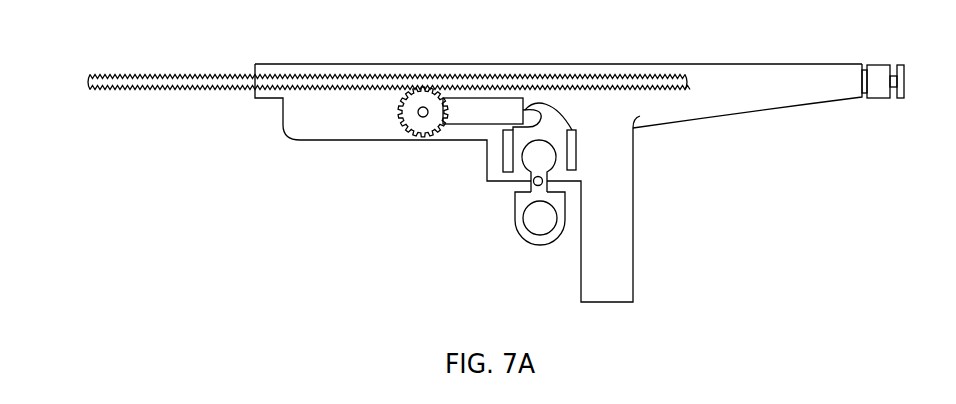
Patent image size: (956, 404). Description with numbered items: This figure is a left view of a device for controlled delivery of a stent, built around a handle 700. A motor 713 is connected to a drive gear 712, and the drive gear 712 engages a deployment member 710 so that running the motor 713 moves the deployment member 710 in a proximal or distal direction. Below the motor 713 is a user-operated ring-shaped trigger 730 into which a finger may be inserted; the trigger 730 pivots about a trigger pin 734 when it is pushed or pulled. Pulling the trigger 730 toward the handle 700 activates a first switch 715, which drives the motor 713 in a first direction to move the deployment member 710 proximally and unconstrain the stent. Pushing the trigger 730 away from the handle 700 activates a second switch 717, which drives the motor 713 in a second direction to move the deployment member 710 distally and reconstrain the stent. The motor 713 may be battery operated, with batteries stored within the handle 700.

The handle 700 is at (753, 65).
The deployment member 710 is at (272, 64).
The drive gear 712 is at (408, 127).
The motor 713 is at (493, 98).
The first switch 715 is at (503, 152).
The second switch 717 is at (577, 150).
The ring-shaped trigger 730 is at (528, 238).
The trigger pin 734 is at (535, 185).